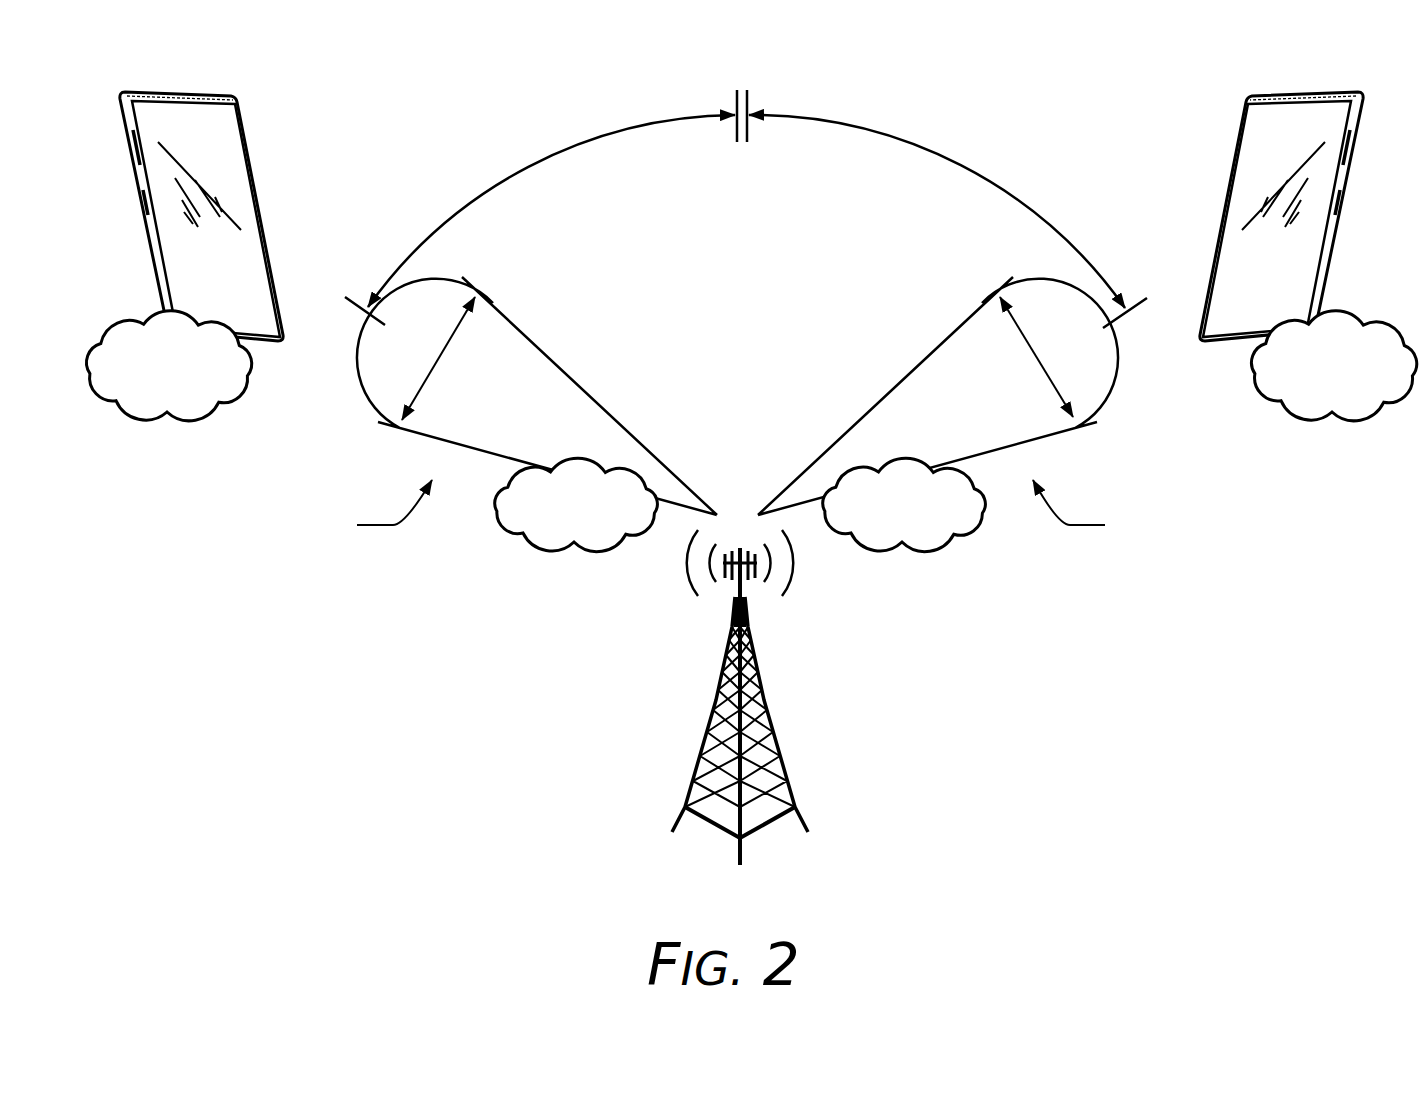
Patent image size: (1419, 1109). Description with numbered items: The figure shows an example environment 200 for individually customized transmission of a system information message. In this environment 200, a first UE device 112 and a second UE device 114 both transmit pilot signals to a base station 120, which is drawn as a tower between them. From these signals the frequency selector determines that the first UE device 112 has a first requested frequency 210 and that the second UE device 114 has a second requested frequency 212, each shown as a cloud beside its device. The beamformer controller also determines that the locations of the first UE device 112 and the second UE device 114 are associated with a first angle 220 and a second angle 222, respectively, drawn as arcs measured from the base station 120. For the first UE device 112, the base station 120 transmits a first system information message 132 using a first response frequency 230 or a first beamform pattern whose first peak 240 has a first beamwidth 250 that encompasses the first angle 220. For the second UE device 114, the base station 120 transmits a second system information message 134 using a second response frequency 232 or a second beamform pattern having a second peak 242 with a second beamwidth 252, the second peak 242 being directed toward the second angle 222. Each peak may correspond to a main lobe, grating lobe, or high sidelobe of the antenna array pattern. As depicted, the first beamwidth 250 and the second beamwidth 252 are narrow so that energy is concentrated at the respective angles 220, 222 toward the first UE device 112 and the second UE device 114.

The first UE device 112 is at (162, 92).
The second UE device 114 is at (1321, 92).
The base station 120 is at (718, 690).
The first system information message 132 is at (296, 523).
The second system information message 134 is at (1169, 523).
The environment 200 is at (248, 845).
The first requested frequency 210 is at (169, 366).
The second requested frequency 212 is at (1334, 366).
The first angle 220 is at (503, 180).
The second angle 222 is at (986, 183).
The first response frequency 230 is at (576, 504).
The second response frequency 232 is at (904, 504).
The first peak 240 is at (517, 322).
The second peak 242 is at (957, 322).
The first beamwidth 250 is at (440, 357).
The second beamwidth 252 is at (1033, 357).